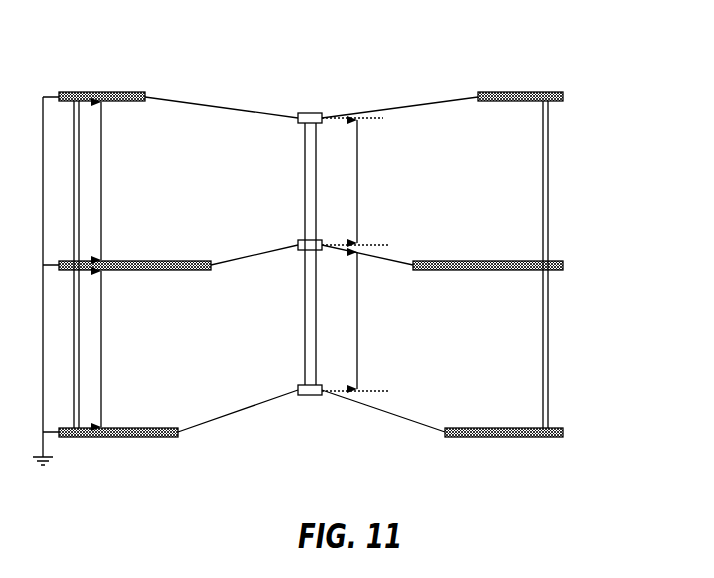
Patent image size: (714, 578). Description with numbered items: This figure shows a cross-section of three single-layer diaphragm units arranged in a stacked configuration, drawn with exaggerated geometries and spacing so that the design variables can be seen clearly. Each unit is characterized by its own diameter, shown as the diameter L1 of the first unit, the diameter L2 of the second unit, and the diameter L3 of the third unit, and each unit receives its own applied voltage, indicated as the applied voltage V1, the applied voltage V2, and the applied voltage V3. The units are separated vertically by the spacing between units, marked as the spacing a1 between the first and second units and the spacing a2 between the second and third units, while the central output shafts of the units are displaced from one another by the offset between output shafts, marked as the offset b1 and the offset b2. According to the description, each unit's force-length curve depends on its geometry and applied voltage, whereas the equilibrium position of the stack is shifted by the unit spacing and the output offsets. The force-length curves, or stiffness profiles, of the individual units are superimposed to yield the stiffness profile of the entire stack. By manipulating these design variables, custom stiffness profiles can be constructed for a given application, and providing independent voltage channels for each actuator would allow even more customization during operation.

The diameter of the first unit L1 is at (268, 89).
The diameter of the second unit L2 is at (236, 236).
The diameter of the third unit L3 is at (252, 398).
The applied voltage of the first unit V1 is at (563, 97).
The applied voltage of the second unit V2 is at (563, 265).
The applied voltage of the third unit V3 is at (563, 432).
The spacing between the first and second units a1 is at (123, 181).
The spacing between the second and third units a2 is at (123, 349).
The offset between the first and second output shafts b1 is at (380, 181).
The offset between the second and third output shafts b2 is at (379, 320).